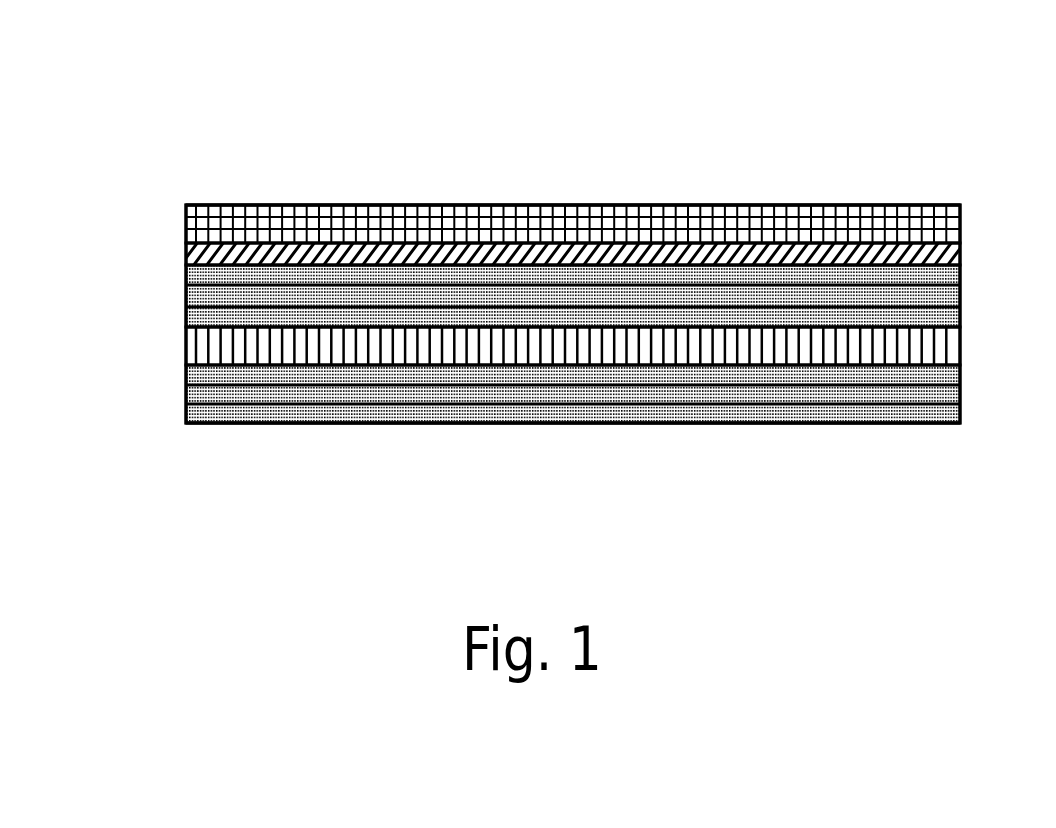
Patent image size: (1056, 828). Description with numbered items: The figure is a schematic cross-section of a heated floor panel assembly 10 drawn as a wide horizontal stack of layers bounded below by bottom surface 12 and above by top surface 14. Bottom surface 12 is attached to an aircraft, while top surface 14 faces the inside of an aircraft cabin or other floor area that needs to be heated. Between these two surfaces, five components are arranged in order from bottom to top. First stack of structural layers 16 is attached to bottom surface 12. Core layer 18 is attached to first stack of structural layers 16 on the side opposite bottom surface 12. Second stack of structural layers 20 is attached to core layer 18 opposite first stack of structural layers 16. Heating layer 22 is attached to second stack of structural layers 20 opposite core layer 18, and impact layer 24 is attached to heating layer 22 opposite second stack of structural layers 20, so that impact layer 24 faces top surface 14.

The heated floor panel assembly 10 is at (141, 156).
The bottom surface 12 is at (634, 449).
The top surface 14 is at (467, 175).
The first stack of structural layers 16 is at (974, 366).
The core layer 18 is at (962, 346).
The second stack of structural layers 20 is at (974, 267).
The heating layer 22 is at (962, 253).
The impact layer 24 is at (962, 222).